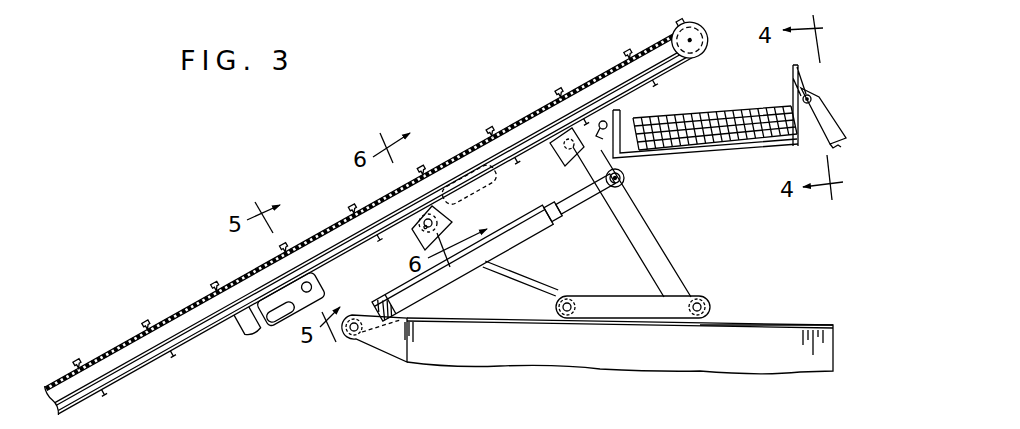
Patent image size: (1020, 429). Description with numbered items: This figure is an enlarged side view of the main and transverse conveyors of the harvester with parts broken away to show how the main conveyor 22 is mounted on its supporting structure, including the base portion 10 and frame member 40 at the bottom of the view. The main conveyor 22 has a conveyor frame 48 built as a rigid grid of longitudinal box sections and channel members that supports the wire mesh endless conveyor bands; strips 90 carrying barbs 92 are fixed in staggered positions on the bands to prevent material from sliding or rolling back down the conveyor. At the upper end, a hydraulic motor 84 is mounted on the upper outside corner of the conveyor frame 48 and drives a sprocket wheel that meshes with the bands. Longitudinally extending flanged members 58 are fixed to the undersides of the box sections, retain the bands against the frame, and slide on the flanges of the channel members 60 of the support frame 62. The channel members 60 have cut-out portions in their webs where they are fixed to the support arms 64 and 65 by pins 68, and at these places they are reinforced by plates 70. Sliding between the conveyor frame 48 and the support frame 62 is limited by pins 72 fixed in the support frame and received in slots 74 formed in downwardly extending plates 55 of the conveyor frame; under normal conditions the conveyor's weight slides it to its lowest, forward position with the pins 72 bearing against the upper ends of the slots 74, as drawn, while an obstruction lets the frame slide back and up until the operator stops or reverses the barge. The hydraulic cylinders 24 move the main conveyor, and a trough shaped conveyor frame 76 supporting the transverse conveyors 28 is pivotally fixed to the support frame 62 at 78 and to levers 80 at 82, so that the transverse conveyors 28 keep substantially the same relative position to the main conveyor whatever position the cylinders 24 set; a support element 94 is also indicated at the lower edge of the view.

The base frame 10 is at (612, 354).
The main conveyor 22 is at (392, 215).
The hydraulic cylinders 24 is at (478, 270).
The transverse conveyors 28 is at (743, 106).
The frame member 40 is at (775, 323).
The conveyor frame 48 is at (140, 350).
The downwardly extending plates 55 is at (292, 303).
The flanged members 58 is at (186, 340).
The channel members 60 is at (243, 334).
The support frame 62 is at (657, 220).
The support arm 64 is at (546, 290).
The support arm 65 is at (676, 266).
The pins 68 is at (562, 140).
The plates 70 is at (420, 236).
The pins 72 is at (304, 282).
The slots 74 is at (272, 317).
The trough shaped conveyor frame 76 is at (748, 150).
The pivot 78 is at (601, 132).
The levers 80 is at (823, 124).
The pivot 82 is at (810, 96).
The hydraulic motors 84 is at (703, 27).
The strips 90 is at (213, 288).
The barbs 92 is at (220, 284).
The support 94 is at (394, 421).